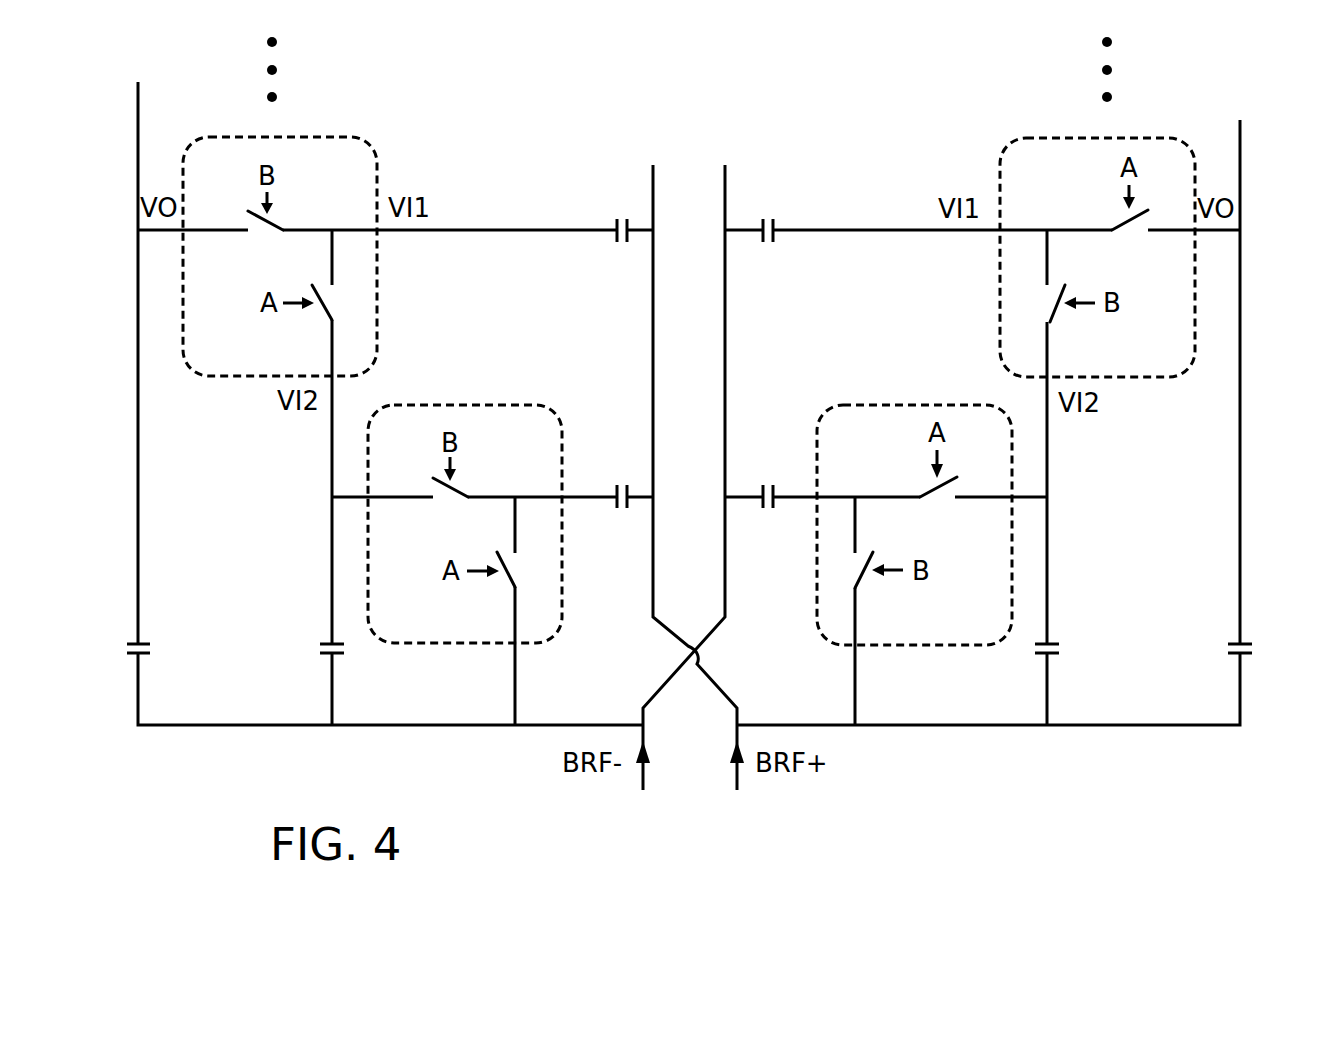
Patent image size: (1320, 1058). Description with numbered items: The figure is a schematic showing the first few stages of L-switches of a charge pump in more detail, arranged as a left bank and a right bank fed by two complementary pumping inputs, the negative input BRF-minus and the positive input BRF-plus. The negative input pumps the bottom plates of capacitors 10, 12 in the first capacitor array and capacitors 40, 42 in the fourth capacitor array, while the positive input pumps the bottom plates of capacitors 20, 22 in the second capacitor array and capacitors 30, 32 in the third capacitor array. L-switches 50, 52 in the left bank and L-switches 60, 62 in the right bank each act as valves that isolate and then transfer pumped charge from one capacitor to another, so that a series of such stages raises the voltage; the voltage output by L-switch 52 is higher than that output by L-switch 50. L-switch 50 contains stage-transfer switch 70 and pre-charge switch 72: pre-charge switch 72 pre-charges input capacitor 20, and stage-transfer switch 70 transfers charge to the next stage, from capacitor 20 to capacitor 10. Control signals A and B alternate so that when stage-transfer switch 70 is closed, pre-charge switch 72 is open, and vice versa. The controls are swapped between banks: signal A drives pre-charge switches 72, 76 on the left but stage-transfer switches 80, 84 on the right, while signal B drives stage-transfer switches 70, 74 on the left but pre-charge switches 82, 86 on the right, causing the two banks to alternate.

The capacitor 10 is at (336, 653).
The capacitor 12 is at (142, 653).
The capacitor 20 is at (622, 508).
The capacitor 22 is at (622, 242).
The capacitor 30 is at (1051, 653).
The capacitor 32 is at (1244, 653).
The capacitor 40 is at (768, 508).
The capacitor 42 is at (768, 242).
The L-switch 50 is at (428, 578).
The L-switch 52 is at (243, 309).
The L-switch 60 is at (988, 583).
The L-switch 62 is at (1179, 318).
The stage-transfer switch 70 is at (468, 496).
The pre-charge switch 72 is at (515, 588).
The stage-transfer switch 74 is at (283, 229).
The pre-charge switch 76 is at (332, 321).
The stage-transfer switch 80 is at (920, 496).
The pre-charge switch 82 is at (855, 590).
The stage-transfer switch 84 is at (1112, 229).
The pre-charge switch 86 is at (1050, 324).